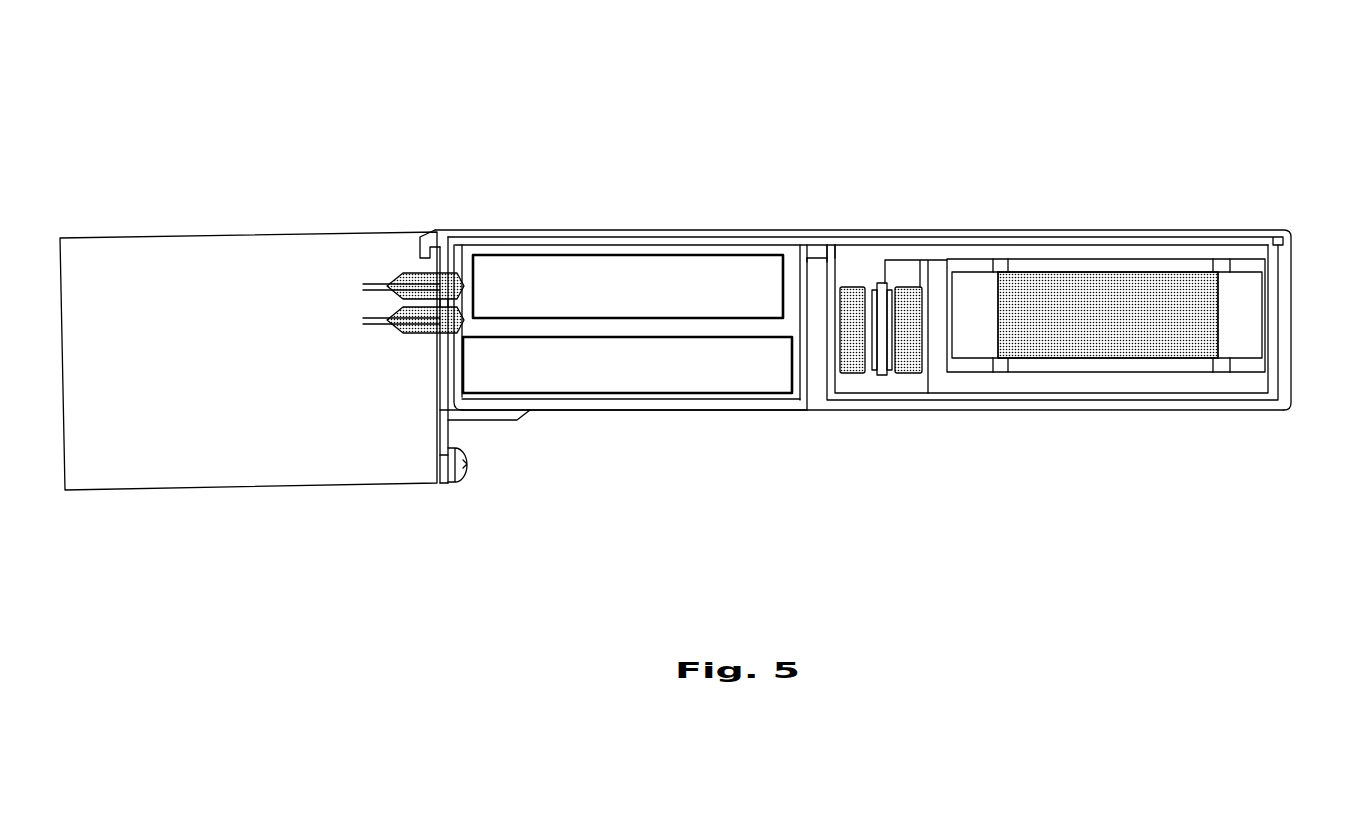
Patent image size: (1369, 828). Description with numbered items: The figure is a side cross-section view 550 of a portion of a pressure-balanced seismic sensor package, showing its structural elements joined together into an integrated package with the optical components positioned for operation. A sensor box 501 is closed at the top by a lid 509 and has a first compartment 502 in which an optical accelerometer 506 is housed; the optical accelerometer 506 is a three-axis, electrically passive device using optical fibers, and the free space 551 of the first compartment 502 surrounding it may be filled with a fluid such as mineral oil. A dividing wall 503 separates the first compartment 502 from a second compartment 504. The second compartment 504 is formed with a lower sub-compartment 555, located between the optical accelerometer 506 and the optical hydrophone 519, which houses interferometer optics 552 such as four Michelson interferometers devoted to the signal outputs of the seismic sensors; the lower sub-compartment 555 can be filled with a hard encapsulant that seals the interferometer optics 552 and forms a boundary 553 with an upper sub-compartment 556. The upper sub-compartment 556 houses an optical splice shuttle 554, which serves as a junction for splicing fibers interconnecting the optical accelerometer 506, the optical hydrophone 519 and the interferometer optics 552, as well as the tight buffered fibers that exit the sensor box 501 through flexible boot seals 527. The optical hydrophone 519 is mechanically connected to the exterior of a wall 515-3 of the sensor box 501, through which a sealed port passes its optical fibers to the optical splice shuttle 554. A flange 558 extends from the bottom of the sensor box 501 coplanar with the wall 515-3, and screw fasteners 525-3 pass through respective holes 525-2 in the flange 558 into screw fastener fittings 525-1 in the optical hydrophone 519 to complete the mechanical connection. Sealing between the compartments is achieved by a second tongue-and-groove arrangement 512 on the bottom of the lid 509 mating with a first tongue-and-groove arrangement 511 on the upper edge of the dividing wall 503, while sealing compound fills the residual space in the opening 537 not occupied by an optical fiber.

The side cross-section view 550 is at (224, 102).
The sensor box 501 is at (1291, 318).
The lid 509 is at (1177, 229).
The first compartment 502 is at (1167, 385).
The free space 551 is at (866, 258).
The opening 537 is at (835, 258).
The optical accelerometer 506 is at (1100, 358).
The optical hydrophone 519 is at (256, 370).
The flexible boot seals 527 is at (386, 278).
The wall 515-3 is at (437, 373).
The upper sub-compartment 556 is at (792, 262).
The optical splice shuttle 554 is at (644, 303).
The interferometer optics 552 is at (644, 383).
The boundary 553 is at (733, 323).
The first tongue-and-groove arrangement 511 is at (795, 270).
The second tongue-and-groove arrangement 512 is at (818, 252).
The second compartment 504 is at (783, 325).
The dividing wall 503 is at (817, 393).
The lower sub-compartment 555 is at (457, 372).
The flange 558 is at (450, 433).
The screw fastener fittings 525-1 is at (440, 457).
The hole 525-2 is at (447, 458).
The screw fasteners 525-3 is at (465, 477).